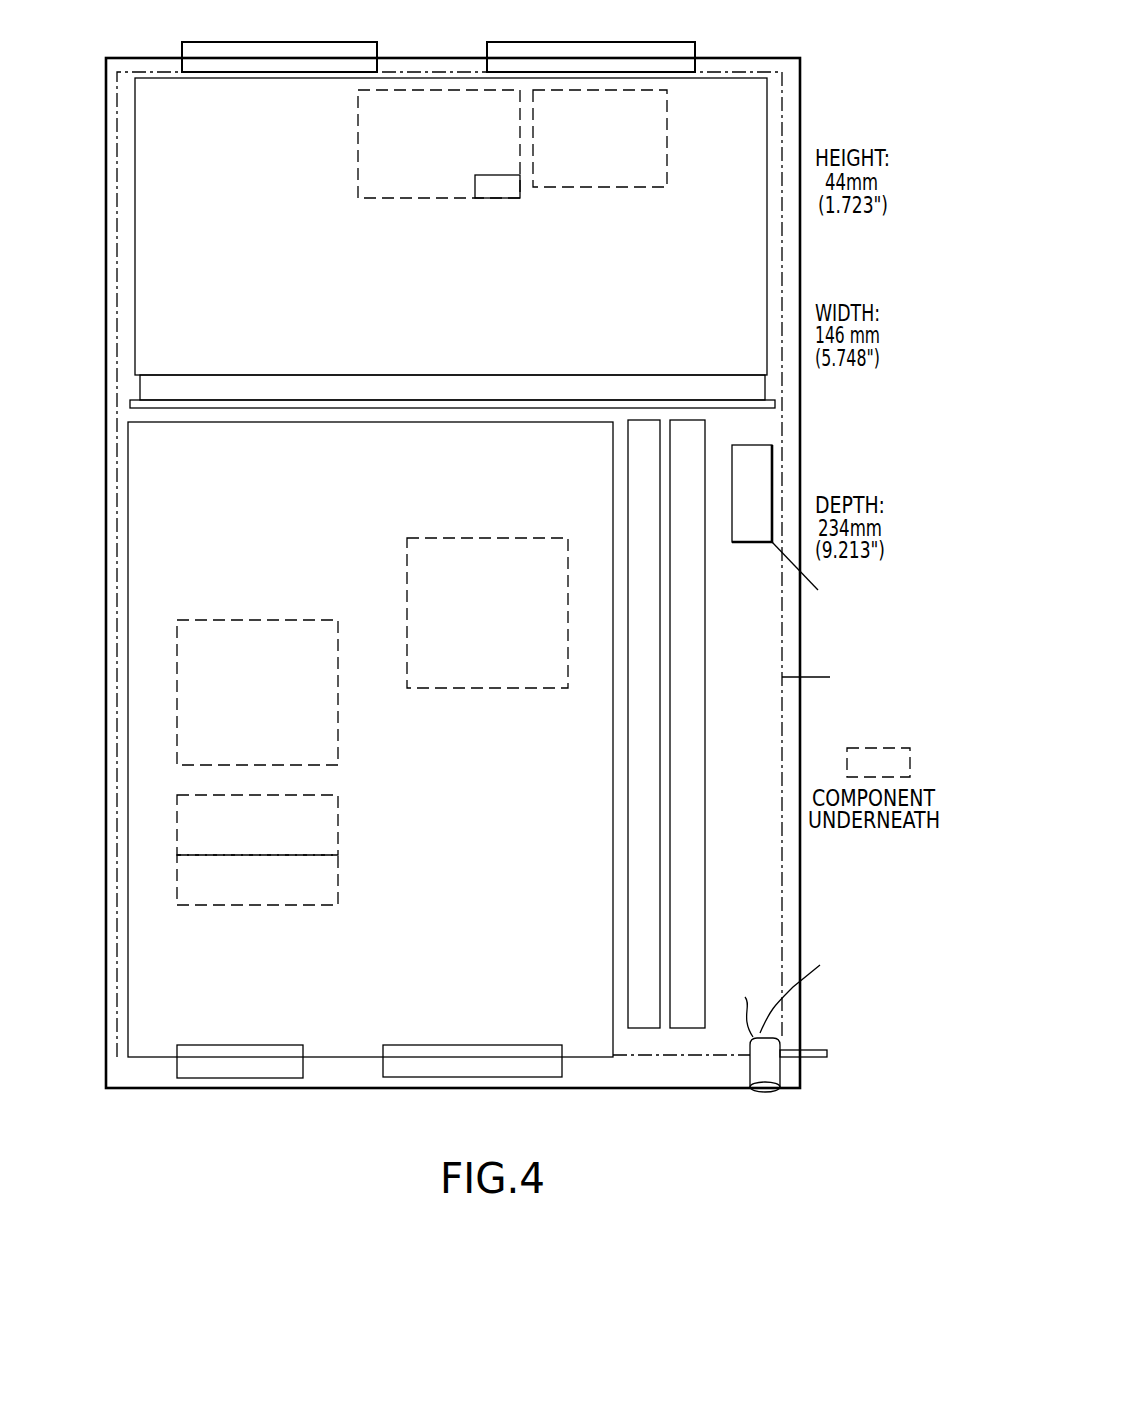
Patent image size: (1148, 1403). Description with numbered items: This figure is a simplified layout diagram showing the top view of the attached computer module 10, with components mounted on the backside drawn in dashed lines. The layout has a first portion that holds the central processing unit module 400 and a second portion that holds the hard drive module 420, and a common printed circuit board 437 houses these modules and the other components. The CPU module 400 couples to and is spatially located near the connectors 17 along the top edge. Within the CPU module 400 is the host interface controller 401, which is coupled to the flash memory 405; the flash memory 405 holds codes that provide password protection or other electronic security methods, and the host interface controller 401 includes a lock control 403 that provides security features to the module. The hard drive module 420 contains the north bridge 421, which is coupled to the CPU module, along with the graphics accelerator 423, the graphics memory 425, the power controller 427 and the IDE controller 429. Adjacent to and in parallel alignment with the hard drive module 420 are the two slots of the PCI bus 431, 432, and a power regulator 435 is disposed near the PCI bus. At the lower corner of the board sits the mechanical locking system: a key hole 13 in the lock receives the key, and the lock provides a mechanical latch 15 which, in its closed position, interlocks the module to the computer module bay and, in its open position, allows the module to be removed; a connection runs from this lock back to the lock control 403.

The module 10 is at (824, 88).
The key hole 13 is at (770, 1092).
The mechanical latch 15 is at (827, 1053).
The connectors 17 is at (377, 46).
The central processing unit module 400 is at (157, 97).
The host interface controller 401 is at (395, 190).
The lock control 403 is at (503, 188).
The flash memory 405 is at (660, 180).
The hard drive module 420 is at (155, 1042).
The north bridge 421 is at (507, 677).
The graphics accelerator 423 is at (328, 717).
The graphics memory 425 is at (332, 883).
The power controller 427 is at (292, 1075).
The IDE controller 429 is at (420, 1047).
The PCI bus 431 is at (638, 824).
The PCI bus 432 is at (692, 720).
The power regulator 435 is at (762, 477).
The printed circuit board 437 is at (782, 727).